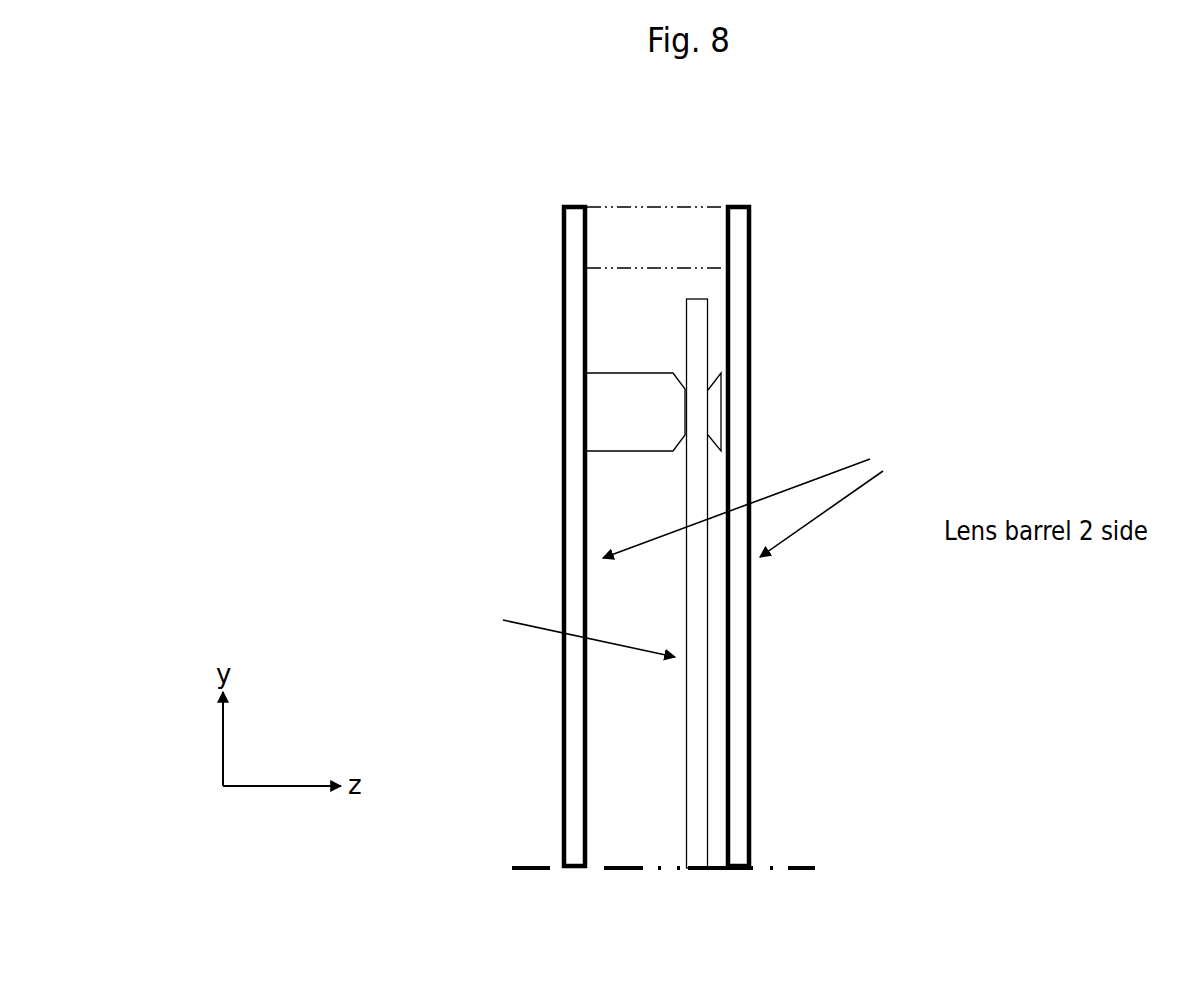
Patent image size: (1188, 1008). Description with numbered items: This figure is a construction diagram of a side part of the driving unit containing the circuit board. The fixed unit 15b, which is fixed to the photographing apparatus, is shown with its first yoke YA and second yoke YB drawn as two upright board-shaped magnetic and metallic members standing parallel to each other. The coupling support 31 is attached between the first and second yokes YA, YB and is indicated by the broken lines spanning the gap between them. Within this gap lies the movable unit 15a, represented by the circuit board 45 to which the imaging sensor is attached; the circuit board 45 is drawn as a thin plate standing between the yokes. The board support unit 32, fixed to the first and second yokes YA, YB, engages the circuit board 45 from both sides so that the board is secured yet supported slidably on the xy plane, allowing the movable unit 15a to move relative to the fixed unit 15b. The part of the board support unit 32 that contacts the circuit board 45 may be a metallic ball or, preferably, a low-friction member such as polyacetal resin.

The first yoke YA is at (576, 205).
The second yoke YB is at (733, 206).
The coupling support 31 is at (623, 207).
The board support unit 32 is at (612, 372).
The circuit board 45 is at (707, 337).
The movable unit 15a is at (561, 626).
The fixed unit 15b is at (758, 496).